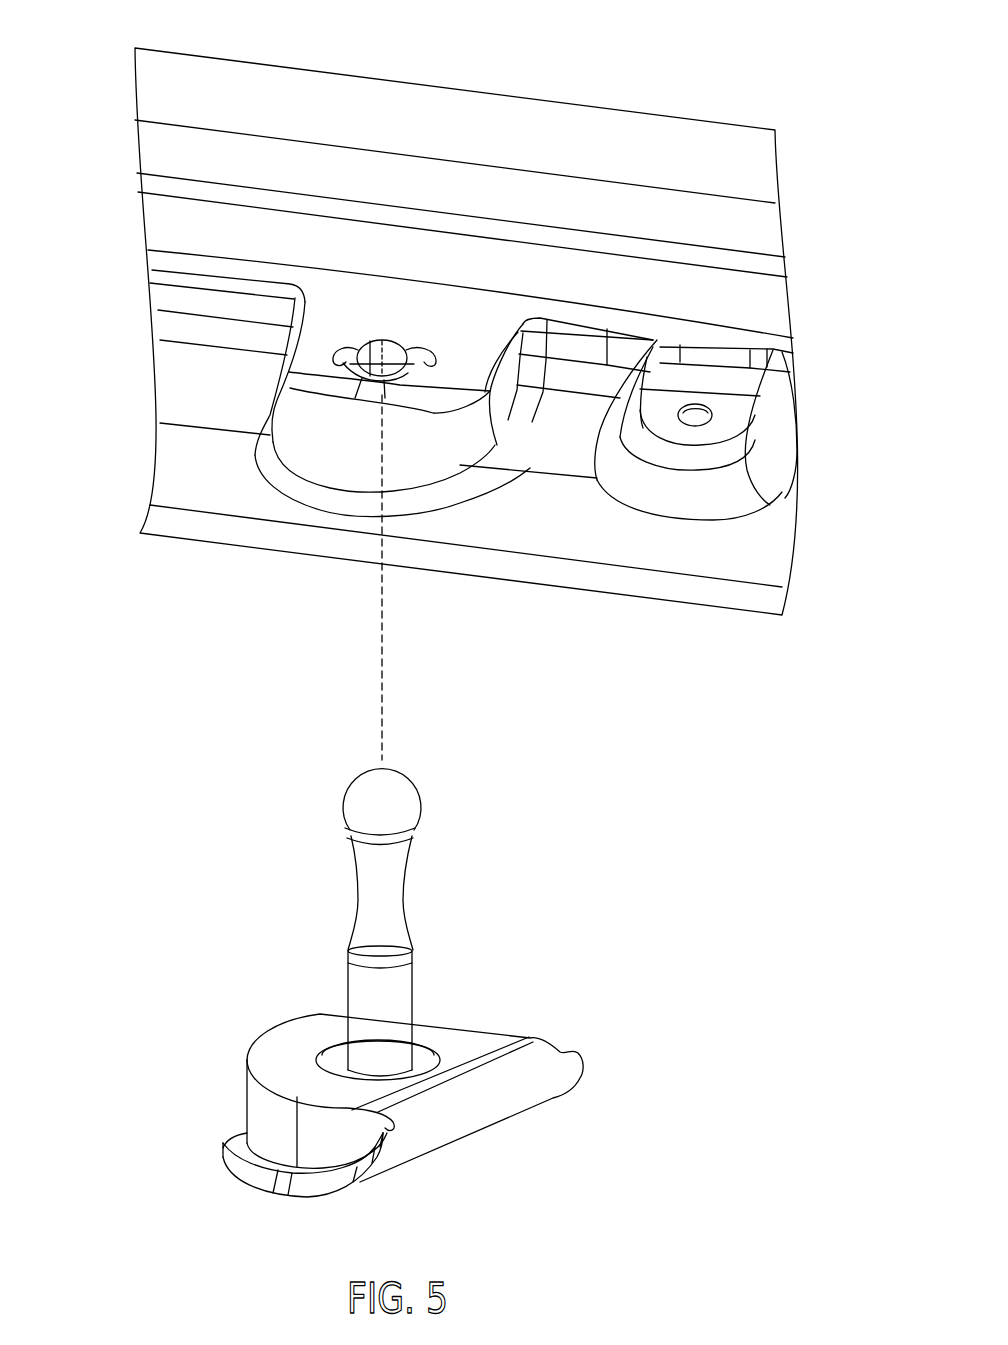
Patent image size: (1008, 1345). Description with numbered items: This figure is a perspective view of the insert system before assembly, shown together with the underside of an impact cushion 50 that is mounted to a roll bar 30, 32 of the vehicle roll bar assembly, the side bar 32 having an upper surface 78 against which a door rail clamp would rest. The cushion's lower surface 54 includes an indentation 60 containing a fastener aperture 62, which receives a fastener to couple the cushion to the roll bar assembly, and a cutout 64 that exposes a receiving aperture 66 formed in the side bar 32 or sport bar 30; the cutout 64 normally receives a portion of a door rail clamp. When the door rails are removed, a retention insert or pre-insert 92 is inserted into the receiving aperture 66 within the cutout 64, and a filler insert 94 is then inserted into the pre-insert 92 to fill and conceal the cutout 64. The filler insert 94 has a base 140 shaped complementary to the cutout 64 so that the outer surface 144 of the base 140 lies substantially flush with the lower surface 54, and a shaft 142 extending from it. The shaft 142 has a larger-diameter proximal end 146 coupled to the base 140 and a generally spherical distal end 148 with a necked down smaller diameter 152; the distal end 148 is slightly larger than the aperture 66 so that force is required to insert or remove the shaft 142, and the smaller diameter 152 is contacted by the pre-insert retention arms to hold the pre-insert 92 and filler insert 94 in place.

The rear roll or sport bar 30 is at (413, 83).
The side bar 32 is at (461, 146).
The impact cushion 50 is at (685, 284).
The lower surface 54 is at (175, 462).
The indentation 60 is at (745, 410).
The fastener aperture 62 is at (710, 424).
The cutout 64 is at (447, 437).
The receiving aperture 66 is at (410, 340).
The upper surface 78 is at (325, 305).
The retention insert or pre-insert 92 is at (368, 379).
The impact cushion insert or filler insert 94 is at (210, 947).
The base 140 is at (247, 1104).
The shaft 142 is at (424, 968).
The outer surface 144 is at (357, 1180).
The proximal end 146 is at (415, 1038).
The distal end 148 is at (342, 840).
The necked down smaller diameter 152 is at (404, 891).